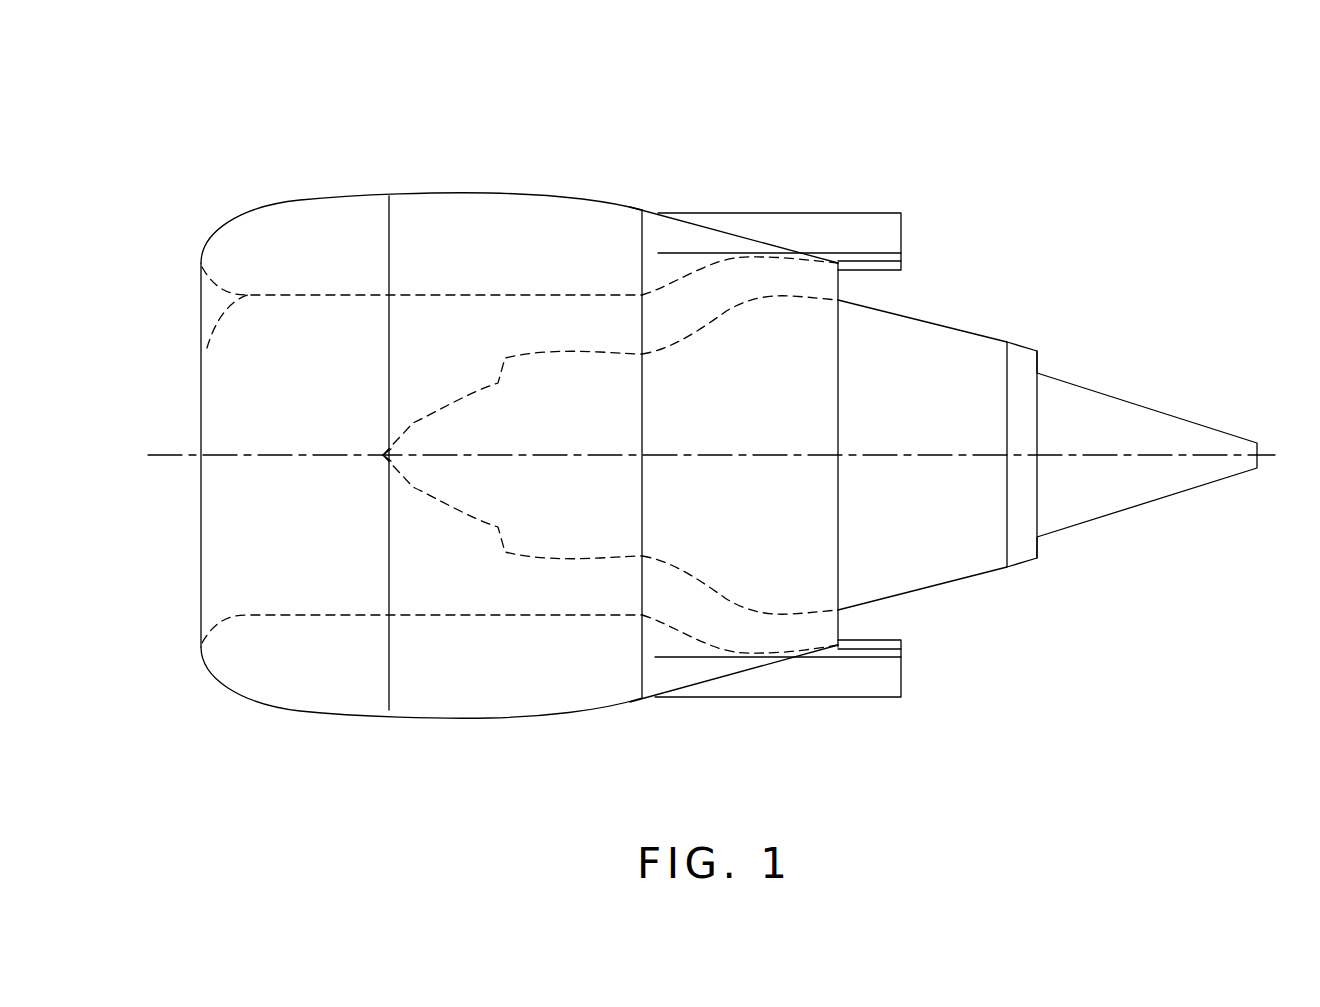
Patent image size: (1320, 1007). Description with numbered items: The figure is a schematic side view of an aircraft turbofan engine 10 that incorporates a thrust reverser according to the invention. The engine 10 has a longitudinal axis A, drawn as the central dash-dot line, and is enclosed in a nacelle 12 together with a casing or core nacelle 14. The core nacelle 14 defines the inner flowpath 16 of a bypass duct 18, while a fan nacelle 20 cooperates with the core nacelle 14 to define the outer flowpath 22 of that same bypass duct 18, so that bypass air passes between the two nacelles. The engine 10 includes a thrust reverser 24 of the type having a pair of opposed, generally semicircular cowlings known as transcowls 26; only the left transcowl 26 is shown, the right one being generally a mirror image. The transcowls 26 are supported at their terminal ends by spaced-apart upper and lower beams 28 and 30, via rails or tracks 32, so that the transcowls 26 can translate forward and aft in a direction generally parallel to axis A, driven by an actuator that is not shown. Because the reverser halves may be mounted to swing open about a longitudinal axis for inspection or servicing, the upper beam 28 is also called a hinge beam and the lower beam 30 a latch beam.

The aircraft turbofan engine 10 is at (722, 88).
The nacelle 12 is at (517, 192).
The core nacelle 14 is at (978, 557).
The inner flowpath 16 is at (762, 612).
The bypass duct 18 is at (525, 318).
The fan nacelle 20 is at (298, 230).
The outer flowpath 22 is at (201, 350).
The thrust reverser 24 is at (786, 200).
The transcowl 26 is at (640, 679).
The upper beam 28 is at (890, 233).
The lower beam 30 is at (888, 675).
The tracks 32 is at (884, 258).
The longitudinal axis A is at (185, 458).